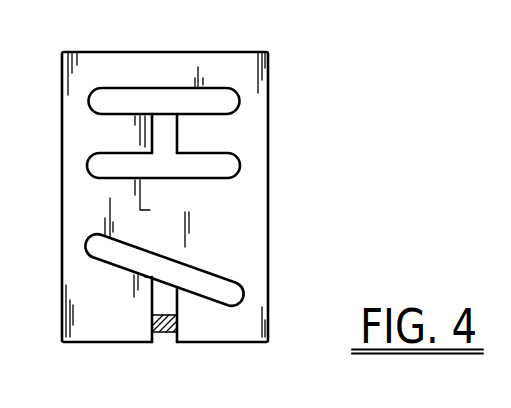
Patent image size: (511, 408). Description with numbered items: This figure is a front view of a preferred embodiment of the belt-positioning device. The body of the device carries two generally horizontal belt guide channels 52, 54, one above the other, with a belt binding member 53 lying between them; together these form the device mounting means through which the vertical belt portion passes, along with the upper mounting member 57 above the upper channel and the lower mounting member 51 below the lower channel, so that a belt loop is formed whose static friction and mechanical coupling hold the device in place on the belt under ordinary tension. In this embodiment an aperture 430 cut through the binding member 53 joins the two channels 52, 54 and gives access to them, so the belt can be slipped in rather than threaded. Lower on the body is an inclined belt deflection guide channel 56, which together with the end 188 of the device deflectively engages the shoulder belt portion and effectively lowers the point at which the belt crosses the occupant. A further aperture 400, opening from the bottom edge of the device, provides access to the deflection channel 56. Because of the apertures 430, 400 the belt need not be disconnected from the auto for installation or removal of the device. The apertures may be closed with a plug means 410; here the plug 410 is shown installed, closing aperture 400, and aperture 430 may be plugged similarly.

The end 188 is at (118, 328).
The aperture 430 is at (165, 130).
The upper mounting member 57 is at (218, 76).
The belt guide channel 52 is at (220, 105).
The belt binding member 53 is at (220, 136).
The belt guide channel 54 is at (183, 172).
The lower mounting member 51 is at (172, 193).
The belt deflection guide channel 56 is at (232, 295).
The aperture 400 is at (167, 303).
The plug means 410 is at (163, 335).